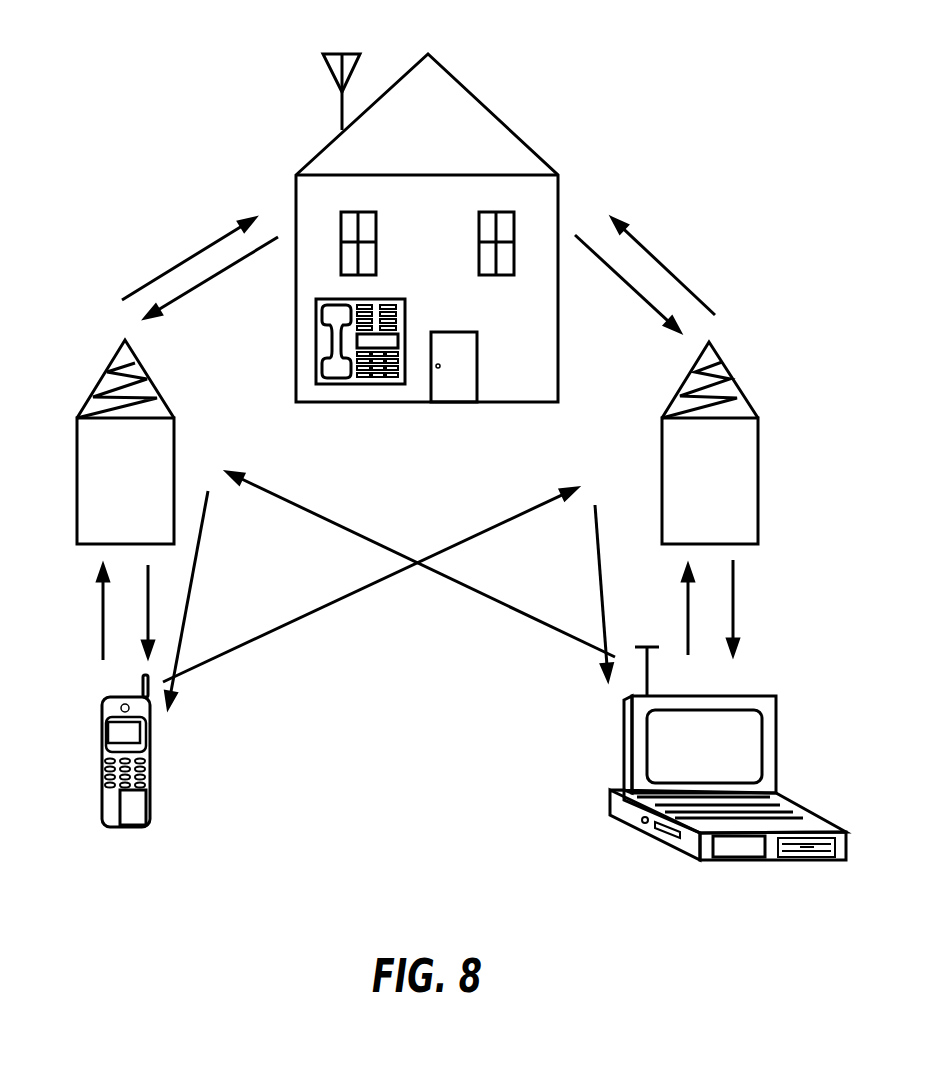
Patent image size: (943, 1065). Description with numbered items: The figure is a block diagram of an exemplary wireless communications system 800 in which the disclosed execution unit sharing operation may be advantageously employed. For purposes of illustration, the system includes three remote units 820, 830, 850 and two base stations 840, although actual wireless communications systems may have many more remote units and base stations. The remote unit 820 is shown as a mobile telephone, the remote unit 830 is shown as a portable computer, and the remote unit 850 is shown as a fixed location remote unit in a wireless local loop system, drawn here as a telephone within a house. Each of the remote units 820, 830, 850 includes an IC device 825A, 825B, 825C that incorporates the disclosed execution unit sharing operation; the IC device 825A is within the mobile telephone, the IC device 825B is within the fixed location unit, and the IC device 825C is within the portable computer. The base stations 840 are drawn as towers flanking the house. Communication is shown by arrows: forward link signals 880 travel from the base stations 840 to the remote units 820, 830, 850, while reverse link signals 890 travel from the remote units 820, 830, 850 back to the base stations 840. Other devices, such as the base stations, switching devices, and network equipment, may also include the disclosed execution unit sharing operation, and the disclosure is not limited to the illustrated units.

The wireless communications system 800 is at (435, 468).
The remote unit 820 is at (104, 703).
The IC device 825A is at (136, 812).
The IC device 825B is at (387, 340).
The IC device 825C is at (745, 848).
The remote unit 830 is at (755, 695).
The base station 840 is at (102, 378).
The remote unit 850 is at (316, 350).
The forward link signals 880 is at (193, 252).
The reverse link signals 890 is at (197, 290).